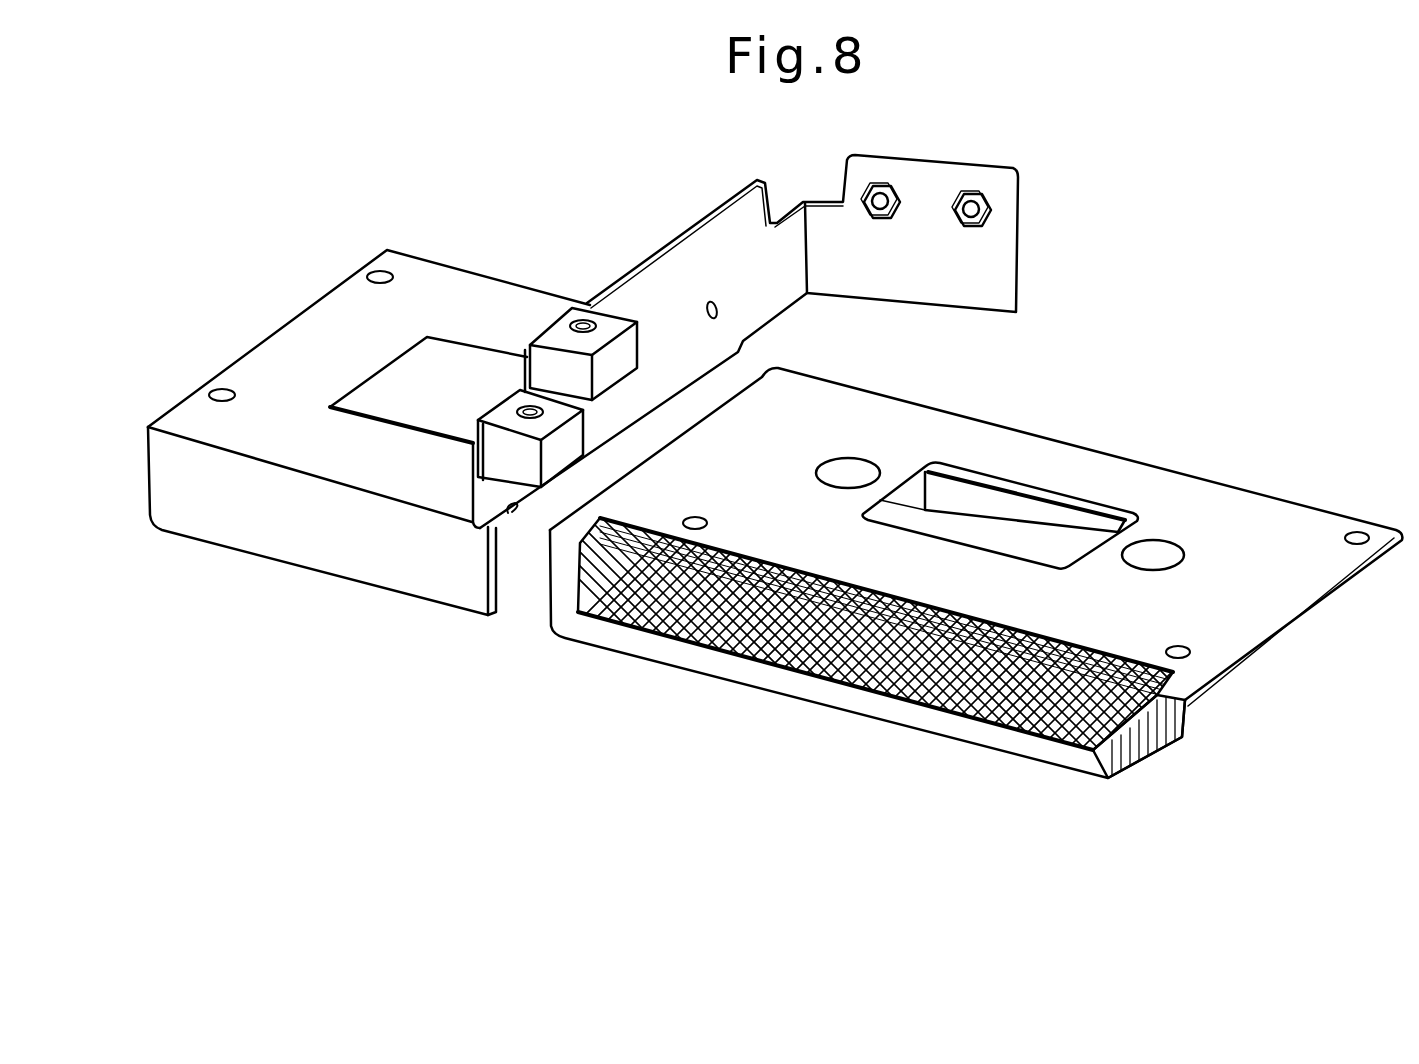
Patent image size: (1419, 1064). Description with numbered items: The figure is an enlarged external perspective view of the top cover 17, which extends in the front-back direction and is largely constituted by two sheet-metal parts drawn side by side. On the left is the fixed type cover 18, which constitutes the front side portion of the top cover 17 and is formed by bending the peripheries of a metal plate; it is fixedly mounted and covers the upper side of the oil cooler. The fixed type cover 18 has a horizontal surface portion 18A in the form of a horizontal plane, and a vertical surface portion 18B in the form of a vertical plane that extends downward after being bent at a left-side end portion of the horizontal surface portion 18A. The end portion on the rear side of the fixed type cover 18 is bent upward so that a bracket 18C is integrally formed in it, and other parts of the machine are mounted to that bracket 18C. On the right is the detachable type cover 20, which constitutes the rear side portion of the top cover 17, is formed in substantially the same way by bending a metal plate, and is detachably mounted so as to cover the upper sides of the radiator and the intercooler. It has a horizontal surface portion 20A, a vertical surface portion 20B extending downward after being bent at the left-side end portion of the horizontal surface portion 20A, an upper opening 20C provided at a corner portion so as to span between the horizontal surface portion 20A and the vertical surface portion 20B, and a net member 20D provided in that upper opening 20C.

The top cover 17 is at (500, 660).
The fixed type cover 18 is at (392, 447).
The horizontal surface portion 18A is at (272, 370).
The vertical surface portion 18B is at (312, 530).
The bracket 18C is at (720, 227).
The detachable type cover 20 is at (909, 578).
The horizontal surface portion 20A is at (1170, 510).
The vertical surface portion 20B is at (798, 687).
The upper opening 20C is at (745, 615).
The net member 20D is at (925, 635).